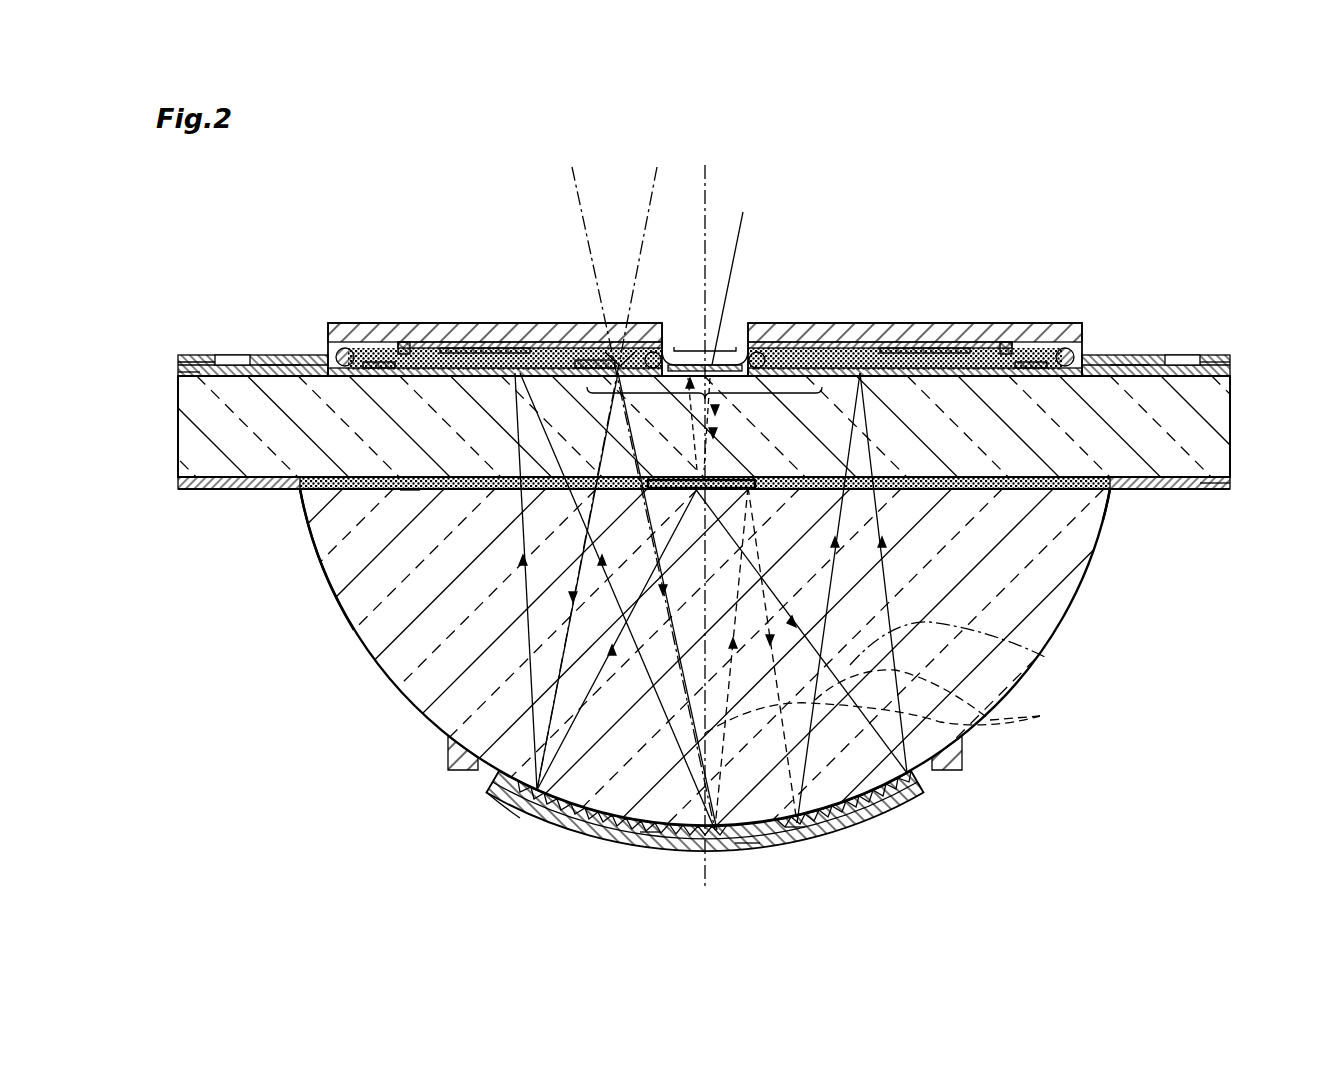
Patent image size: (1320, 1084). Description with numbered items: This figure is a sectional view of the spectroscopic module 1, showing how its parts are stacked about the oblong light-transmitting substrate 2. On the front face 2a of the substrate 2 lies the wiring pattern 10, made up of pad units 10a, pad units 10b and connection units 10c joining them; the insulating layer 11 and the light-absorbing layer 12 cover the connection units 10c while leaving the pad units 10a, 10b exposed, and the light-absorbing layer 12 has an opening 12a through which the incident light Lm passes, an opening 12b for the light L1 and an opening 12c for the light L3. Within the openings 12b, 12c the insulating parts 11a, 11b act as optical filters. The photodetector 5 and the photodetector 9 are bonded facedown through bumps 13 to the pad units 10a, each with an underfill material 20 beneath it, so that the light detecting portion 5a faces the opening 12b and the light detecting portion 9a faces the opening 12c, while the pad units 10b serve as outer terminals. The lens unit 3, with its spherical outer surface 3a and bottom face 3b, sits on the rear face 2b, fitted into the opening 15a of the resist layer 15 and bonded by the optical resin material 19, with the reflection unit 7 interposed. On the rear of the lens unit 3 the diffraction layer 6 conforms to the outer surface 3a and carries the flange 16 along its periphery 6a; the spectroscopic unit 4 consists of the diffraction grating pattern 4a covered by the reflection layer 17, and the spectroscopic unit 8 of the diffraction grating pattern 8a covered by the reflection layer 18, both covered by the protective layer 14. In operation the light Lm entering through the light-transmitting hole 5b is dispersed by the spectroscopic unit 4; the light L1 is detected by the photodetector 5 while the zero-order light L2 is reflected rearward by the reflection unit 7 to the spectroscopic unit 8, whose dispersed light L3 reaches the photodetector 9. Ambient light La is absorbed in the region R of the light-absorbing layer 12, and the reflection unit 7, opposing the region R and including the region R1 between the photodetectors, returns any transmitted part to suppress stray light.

The spectroscopic module 1 is at (1125, 212).
The substrate 2 is at (1200, 424).
The front face of the substrate 2a is at (1212, 366).
The rear face of the substrate 2b is at (1225, 484).
The lens unit 3 is at (1055, 572).
The outer surface of the lens unit 3a is at (343, 620).
The bottom face of the lens unit 3b is at (1108, 485).
The spectroscopic unit 4 is at (580, 852).
The diffraction grating pattern 4a is at (612, 832).
The photodetector 5 is at (365, 332).
The light detecting portion 5a is at (450, 340).
The light-transmitting hole 5b is at (623, 350).
The diffraction layer 6 is at (465, 775).
The periphery of the diffraction layer 6a is at (485, 789).
The reflection unit 7 is at (735, 490).
The spectroscopic unit 8 is at (900, 816).
The diffraction grating pattern 8a is at (855, 824).
The photodetector 9 is at (1020, 332).
The light detecting portion 9a is at (890, 342).
The wiring pattern 10 is at (296, 358).
The pad units 10a is at (330, 368).
The pad units 10b is at (230, 360).
The connection units 10c is at (280, 364).
The insulating layer 11 is at (178, 368).
The insulating part 11a is at (480, 346).
The insulating part 11b is at (920, 346).
The light-absorbing layer 12 is at (182, 360).
The opening 12a is at (590, 364).
The opening 12b is at (402, 350).
The opening 12c is at (1000, 352).
The bumps 13 is at (346, 350).
The protective layer 14 is at (745, 846).
The resist layer 15 is at (215, 483).
The opening of the resist layer 15a is at (300, 485).
The flange 16 is at (965, 760).
The reflection layer 17 is at (650, 840).
The reflection layer 18 is at (795, 834).
The optical resin material 19 is at (412, 492).
The underfill material 20 is at (530, 356).
The region R is at (703, 404).
The region R1 is at (705, 336).
The ambient light La is at (745, 215).
The light Lm is at (580, 200).
The light L1 is at (485, 650).
The light L2 is at (1040, 716).
The light L3 is at (1045, 657).